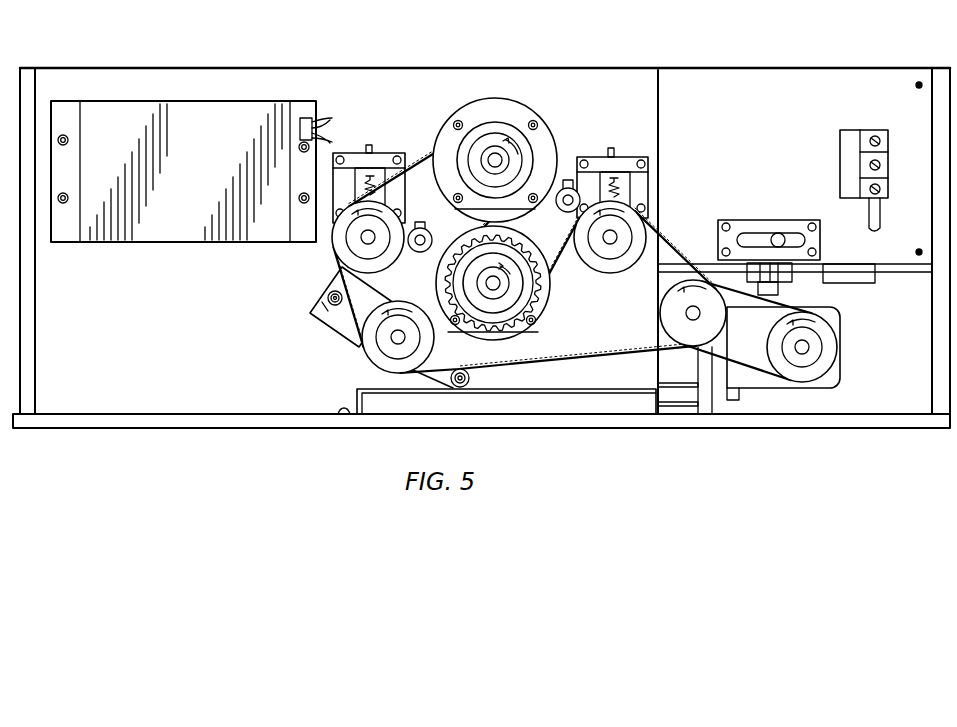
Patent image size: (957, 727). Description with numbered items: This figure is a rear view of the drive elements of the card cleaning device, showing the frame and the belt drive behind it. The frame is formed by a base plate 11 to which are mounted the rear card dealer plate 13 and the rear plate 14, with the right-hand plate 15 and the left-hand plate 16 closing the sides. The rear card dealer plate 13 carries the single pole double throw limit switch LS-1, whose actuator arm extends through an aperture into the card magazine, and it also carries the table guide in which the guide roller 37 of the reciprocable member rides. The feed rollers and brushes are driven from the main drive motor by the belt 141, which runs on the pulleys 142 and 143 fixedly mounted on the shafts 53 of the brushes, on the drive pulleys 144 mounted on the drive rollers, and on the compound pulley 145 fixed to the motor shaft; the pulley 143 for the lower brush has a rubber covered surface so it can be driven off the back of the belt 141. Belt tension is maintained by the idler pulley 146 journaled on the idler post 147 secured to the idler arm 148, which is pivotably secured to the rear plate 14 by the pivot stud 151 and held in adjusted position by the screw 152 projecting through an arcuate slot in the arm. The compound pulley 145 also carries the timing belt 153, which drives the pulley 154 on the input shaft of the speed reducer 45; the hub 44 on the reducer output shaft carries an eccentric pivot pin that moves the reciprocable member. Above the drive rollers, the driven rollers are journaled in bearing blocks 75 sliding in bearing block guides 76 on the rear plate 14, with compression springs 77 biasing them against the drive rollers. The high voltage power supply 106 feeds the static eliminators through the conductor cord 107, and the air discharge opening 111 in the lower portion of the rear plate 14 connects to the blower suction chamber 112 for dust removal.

The base plate 11 is at (806, 429).
The rear card dealer plate 13 is at (768, 68).
The rear plate 14 is at (225, 68).
The right-hand plate 15 is at (36, 276).
The left-hand plate 16 is at (934, 216).
The guide roller 37 is at (778, 240).
The hub 44 is at (788, 283).
The speed reducer 45 is at (771, 389).
The brush shaft 53 is at (495, 160).
The bearing block 75 is at (600, 156).
The bearing block guide 76 is at (645, 194).
The compression spring 77 is at (639, 176).
The high voltage power supply 106 is at (147, 242).
The conductor cord 107 is at (332, 120).
The air discharge opening 111 is at (566, 413).
The blower suction chamber 112 is at (350, 404).
The belt 141 is at (666, 240).
The pulley 142 is at (505, 140).
The pulley 143 is at (512, 248).
The drive pulley 144 is at (408, 254).
The compound pulley 145 is at (660, 316).
The idler pulley 146 is at (420, 310).
The idler post 147 is at (392, 339).
The idler arm 148 is at (324, 332).
The pivot stud 151 is at (472, 378).
The screw 152 is at (328, 297).
The timing belt 153 is at (765, 370).
The pulley 154 is at (773, 339).
The limit switch LS-1 is at (866, 130).